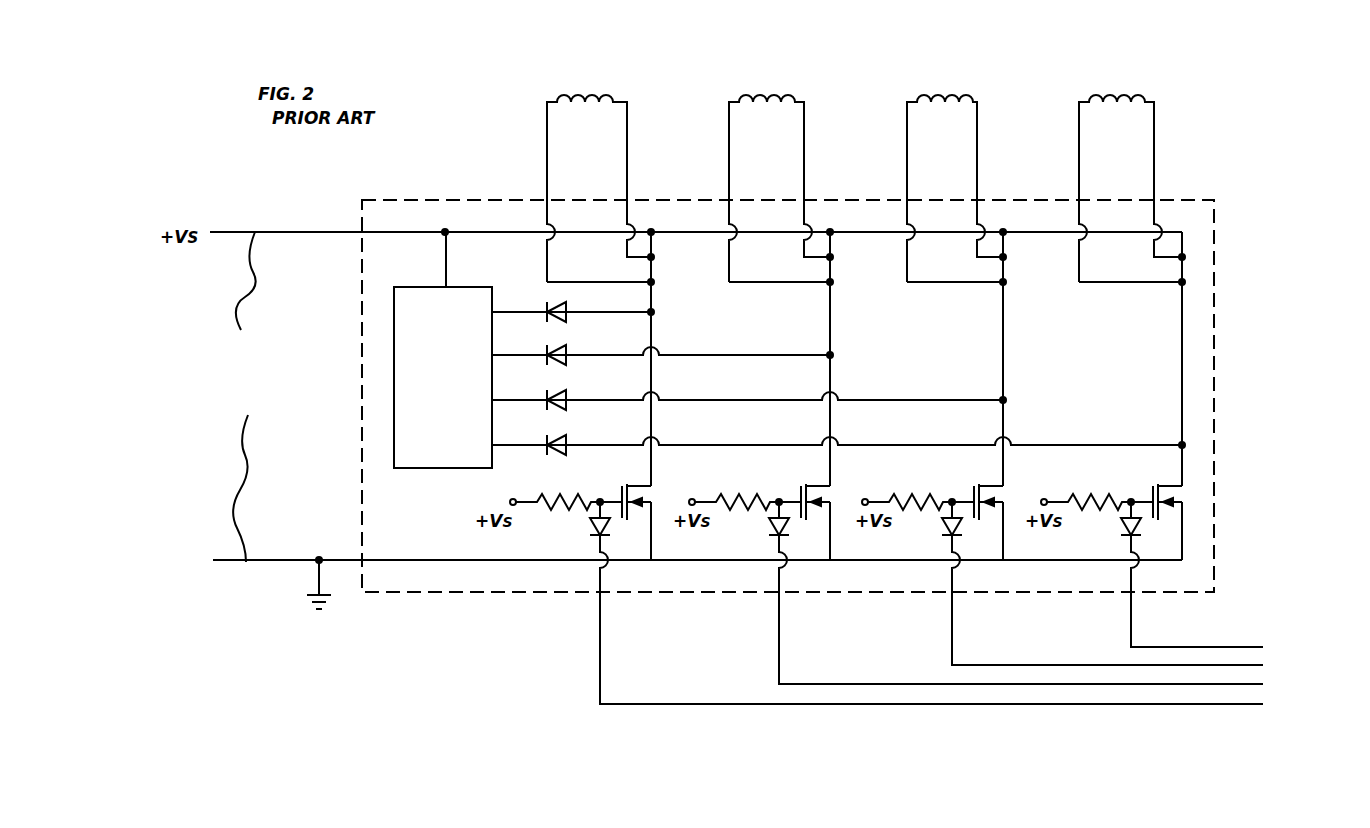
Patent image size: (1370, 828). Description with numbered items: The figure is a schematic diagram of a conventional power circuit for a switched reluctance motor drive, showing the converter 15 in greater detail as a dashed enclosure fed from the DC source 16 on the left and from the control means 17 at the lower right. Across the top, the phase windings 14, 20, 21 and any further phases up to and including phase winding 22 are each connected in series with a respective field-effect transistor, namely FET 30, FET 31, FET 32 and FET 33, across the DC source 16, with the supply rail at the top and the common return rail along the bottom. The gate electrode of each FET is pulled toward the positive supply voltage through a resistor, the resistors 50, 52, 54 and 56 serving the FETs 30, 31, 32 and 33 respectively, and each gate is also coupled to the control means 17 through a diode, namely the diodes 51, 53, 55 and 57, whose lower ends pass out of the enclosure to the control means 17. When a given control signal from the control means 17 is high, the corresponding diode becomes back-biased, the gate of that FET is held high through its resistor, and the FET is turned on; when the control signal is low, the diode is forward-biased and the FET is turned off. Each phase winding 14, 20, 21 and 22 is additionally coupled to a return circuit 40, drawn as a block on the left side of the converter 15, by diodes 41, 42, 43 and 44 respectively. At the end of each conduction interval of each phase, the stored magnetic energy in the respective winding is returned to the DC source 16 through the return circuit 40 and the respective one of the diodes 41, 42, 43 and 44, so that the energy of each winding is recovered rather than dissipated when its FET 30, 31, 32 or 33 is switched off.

The phase winding 14 is at (578, 97).
The phase winding 20 is at (757, 97).
The phase winding 21 is at (937, 97).
The phase winding 22 is at (1107, 97).
The converter 15 is at (440, 596).
The DC source 16 is at (234, 397).
The control means 17 is at (1310, 676).
The return circuit 40 is at (460, 405).
The diode 41 is at (546, 309).
The diode 42 is at (546, 353).
The diode 43 is at (546, 398).
The diode 44 is at (546, 443).
The resistor 50 is at (557, 490).
The resistor 52 is at (723, 488).
The resistor 54 is at (903, 488).
The resistor 56 is at (1075, 488).
The diode 51 is at (590, 532).
The diode 53 is at (766, 532).
The diode 55 is at (942, 532).
The diode 57 is at (1117, 532).
The field-effect transistor 30 is at (652, 506).
The field-effect transistor 31 is at (831, 506).
The field-effect transistor 32 is at (1004, 506).
The field-effect transistor 33 is at (1183, 506).